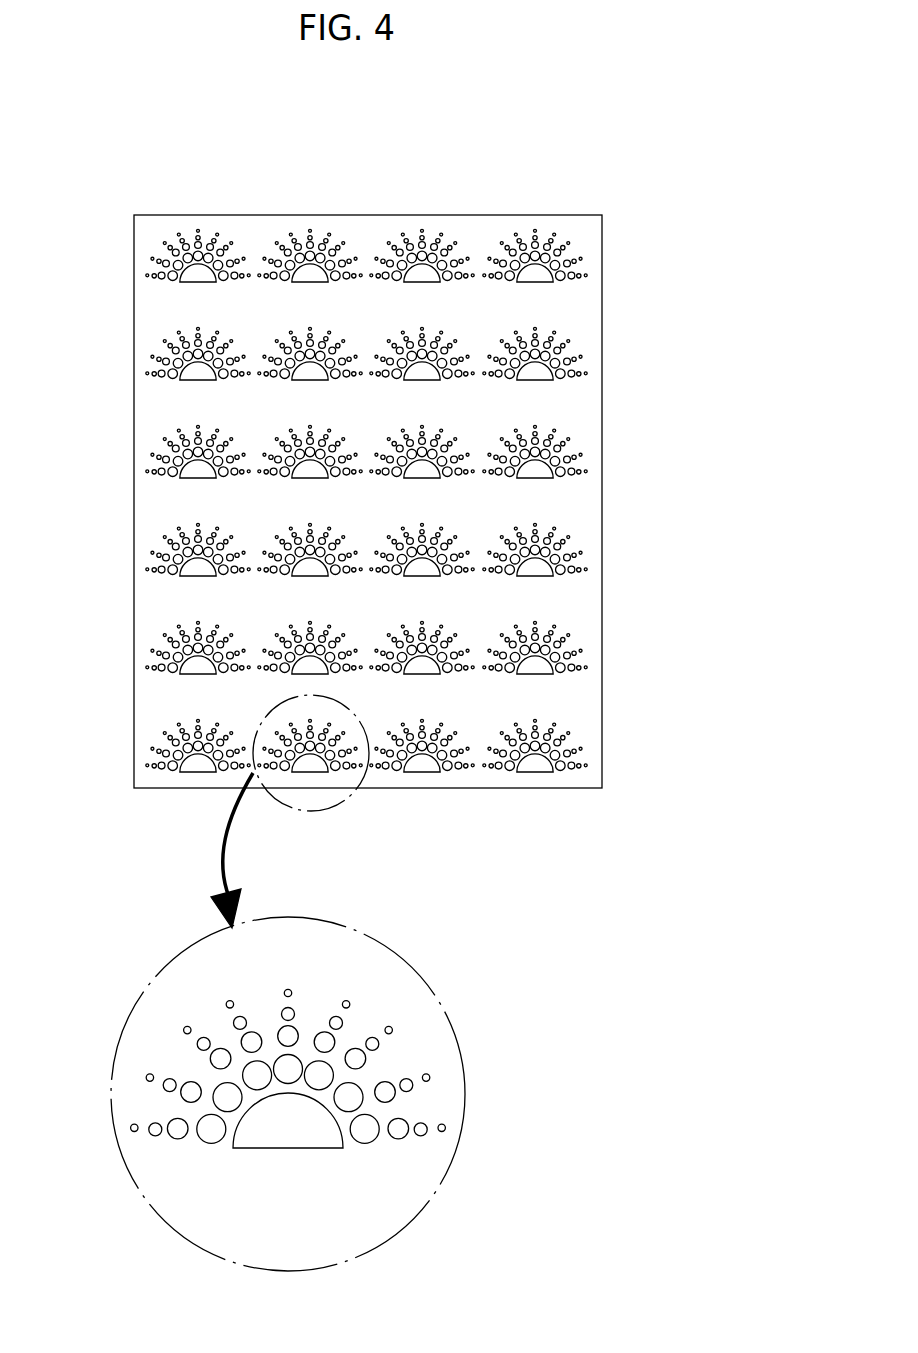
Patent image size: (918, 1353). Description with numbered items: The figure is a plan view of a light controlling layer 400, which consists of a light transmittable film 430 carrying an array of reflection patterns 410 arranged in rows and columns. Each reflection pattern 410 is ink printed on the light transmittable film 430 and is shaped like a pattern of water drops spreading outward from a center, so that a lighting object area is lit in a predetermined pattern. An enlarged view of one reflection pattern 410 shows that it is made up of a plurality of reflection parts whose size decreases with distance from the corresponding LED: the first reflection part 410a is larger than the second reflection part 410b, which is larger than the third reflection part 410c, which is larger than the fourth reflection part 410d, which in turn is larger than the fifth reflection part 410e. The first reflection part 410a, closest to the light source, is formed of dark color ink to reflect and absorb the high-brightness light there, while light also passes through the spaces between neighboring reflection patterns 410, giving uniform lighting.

The light controlling layer 400 is at (78, 145).
The light transmittable film 430 is at (588, 322).
The reflection pattern 410 is at (550, 740).
The first reflection part 410a is at (293, 1136).
The second reflection part 410b is at (368, 1132).
The third reflection part 410c is at (402, 1123).
The fourth reflection part 410d is at (425, 1132).
The fifth reflection part 410e is at (445, 1127).